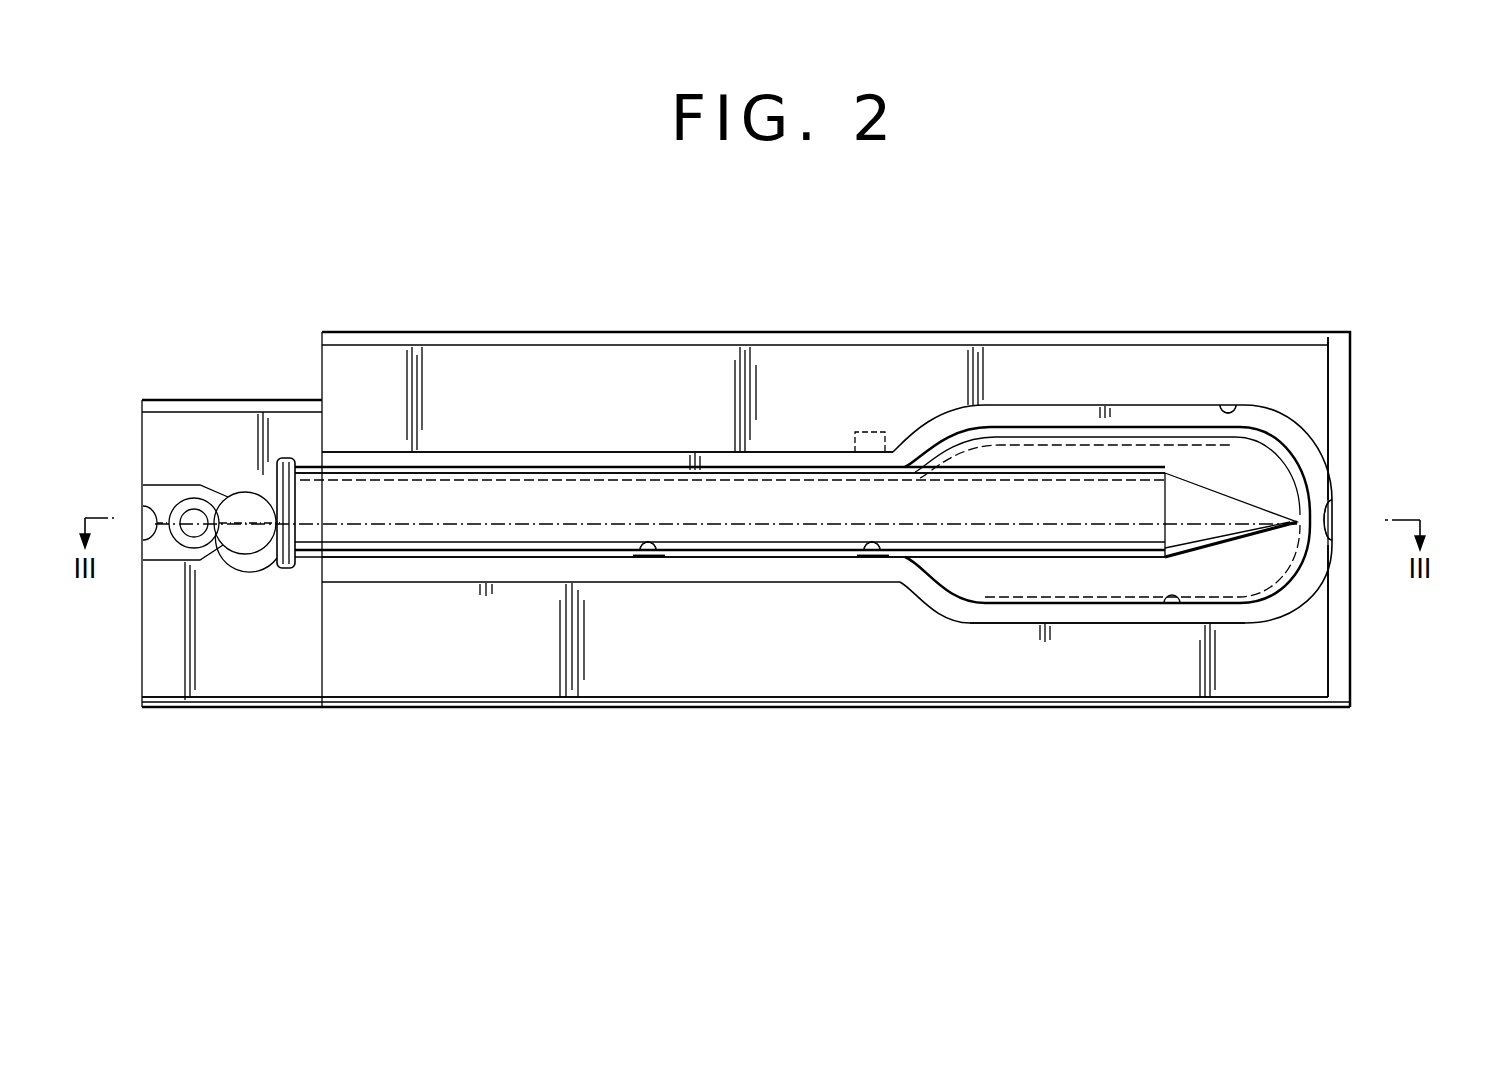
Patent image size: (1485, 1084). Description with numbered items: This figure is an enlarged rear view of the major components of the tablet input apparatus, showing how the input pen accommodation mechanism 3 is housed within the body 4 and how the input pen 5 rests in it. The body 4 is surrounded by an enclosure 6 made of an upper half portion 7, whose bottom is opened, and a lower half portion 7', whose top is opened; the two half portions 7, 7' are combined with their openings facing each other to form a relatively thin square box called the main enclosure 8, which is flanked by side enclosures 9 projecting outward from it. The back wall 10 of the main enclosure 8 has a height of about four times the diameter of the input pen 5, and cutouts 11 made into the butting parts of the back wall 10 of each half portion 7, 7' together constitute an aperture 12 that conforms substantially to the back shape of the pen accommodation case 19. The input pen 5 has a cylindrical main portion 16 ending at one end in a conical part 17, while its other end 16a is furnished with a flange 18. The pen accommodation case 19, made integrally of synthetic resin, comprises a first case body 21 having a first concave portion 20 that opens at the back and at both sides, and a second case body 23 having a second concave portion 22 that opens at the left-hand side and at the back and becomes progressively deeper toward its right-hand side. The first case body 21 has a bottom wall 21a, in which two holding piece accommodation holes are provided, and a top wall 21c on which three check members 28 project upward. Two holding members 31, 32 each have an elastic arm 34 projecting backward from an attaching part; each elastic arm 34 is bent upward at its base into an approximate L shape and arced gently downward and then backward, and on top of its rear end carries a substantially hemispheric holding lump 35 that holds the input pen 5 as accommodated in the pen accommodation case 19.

The input pen accommodation mechanism 3 is at (786, 450).
The body 4 is at (553, 708).
The input pen 5 is at (618, 477).
The enclosure 6 is at (1430, 400).
The upper half portion 7 is at (1374, 519).
The lower half portion 7' is at (1375, 575).
The main enclosure 8 is at (870, 708).
The side enclosure 9 is at (245, 708).
The back wall 10 is at (988, 697).
The cutout 11 is at (1238, 403).
The aperture 12 is at (1328, 297).
The cylindrical main portion 16 is at (520, 478).
The other end of the main portion 16a is at (232, 482).
The conical part 17 is at (1240, 530).
The flange 18 is at (285, 458).
The pen accommodation case 19 is at (1055, 404).
The first concave portion 20 is at (393, 552).
The first case body 21 is at (430, 572).
The bottom wall 21a is at (725, 572).
The top wall 21c is at (573, 453).
The second concave portion 22 is at (1172, 607).
The second case body 23 is at (1097, 615).
The check member 28 is at (876, 430).
The holding member 31 is at (878, 548).
The holding member 32 is at (655, 548).
The elastic arm 34 is at (648, 560).
The holding lump 35 is at (642, 548).